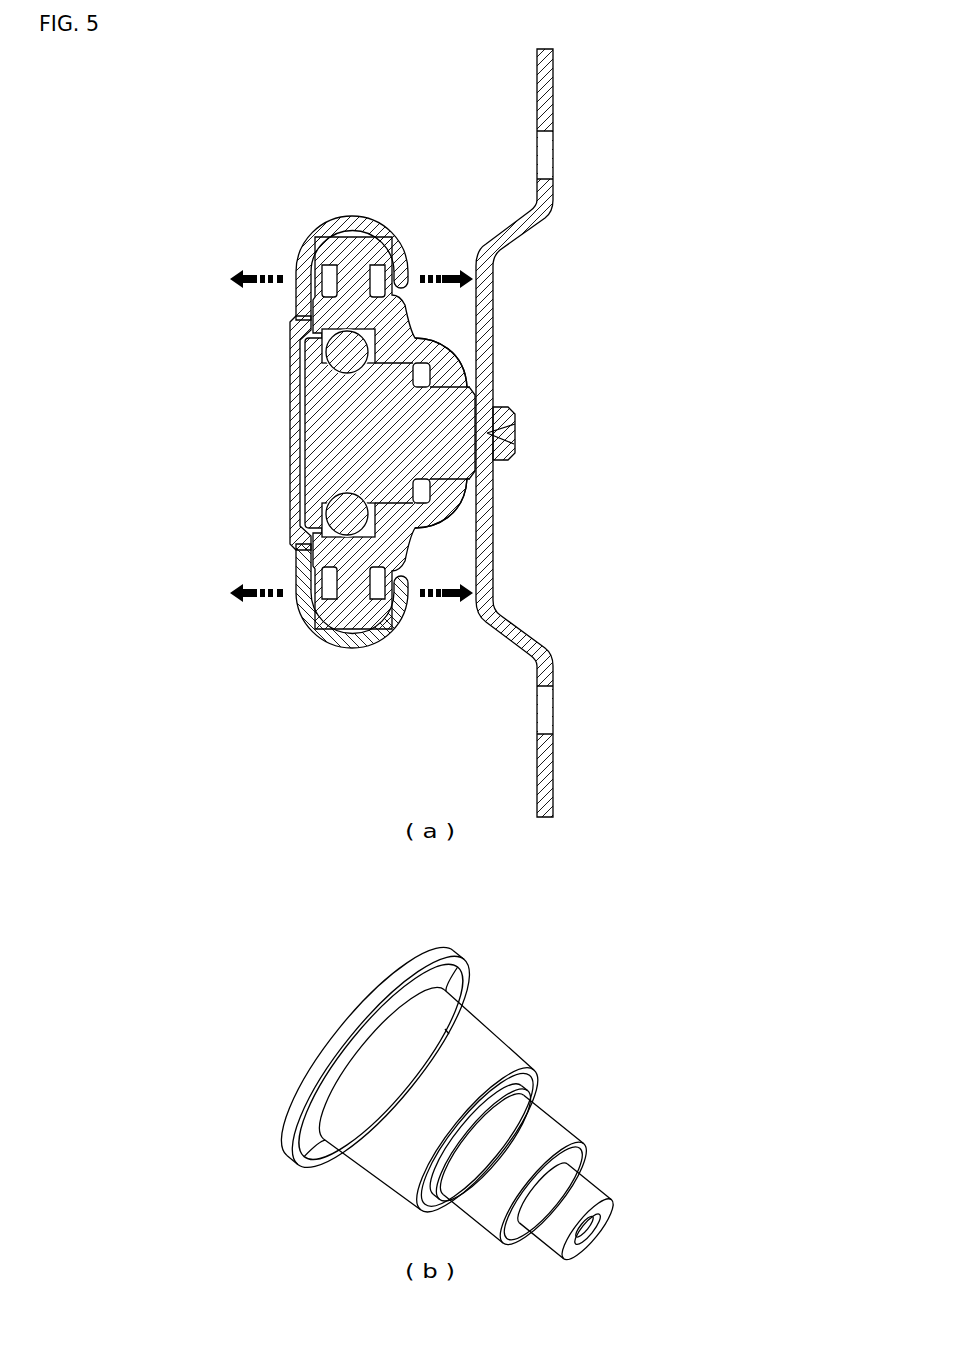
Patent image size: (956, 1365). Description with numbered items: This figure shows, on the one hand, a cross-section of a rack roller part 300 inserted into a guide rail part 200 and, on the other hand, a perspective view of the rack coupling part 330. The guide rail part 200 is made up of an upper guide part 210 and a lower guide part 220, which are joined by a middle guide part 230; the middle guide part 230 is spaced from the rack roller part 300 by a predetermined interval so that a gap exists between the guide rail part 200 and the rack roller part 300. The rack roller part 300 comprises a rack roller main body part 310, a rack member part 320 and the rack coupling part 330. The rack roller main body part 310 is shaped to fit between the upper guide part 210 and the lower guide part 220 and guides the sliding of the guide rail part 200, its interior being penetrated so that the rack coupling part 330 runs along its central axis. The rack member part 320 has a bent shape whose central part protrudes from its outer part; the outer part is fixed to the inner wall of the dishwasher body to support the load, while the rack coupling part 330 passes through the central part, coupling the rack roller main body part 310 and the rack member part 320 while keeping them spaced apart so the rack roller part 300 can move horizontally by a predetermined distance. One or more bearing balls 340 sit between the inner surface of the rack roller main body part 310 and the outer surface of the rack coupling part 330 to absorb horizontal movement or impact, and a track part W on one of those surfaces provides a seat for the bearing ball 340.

The guide rail part 200 is at (190, 217).
The upper guide part 210 is at (355, 218).
The lower guide part 220 is at (342, 641).
The middle guide part 230 is at (290, 420).
The rack roller part 300 is at (597, 286).
The rack roller main body part 310 is at (450, 497).
The rack member part 320 is at (493, 350).
The rack coupling part 330 is at (515, 440).
The bearing ball 340 is at (352, 353).
The track part W is at (447, 1032).